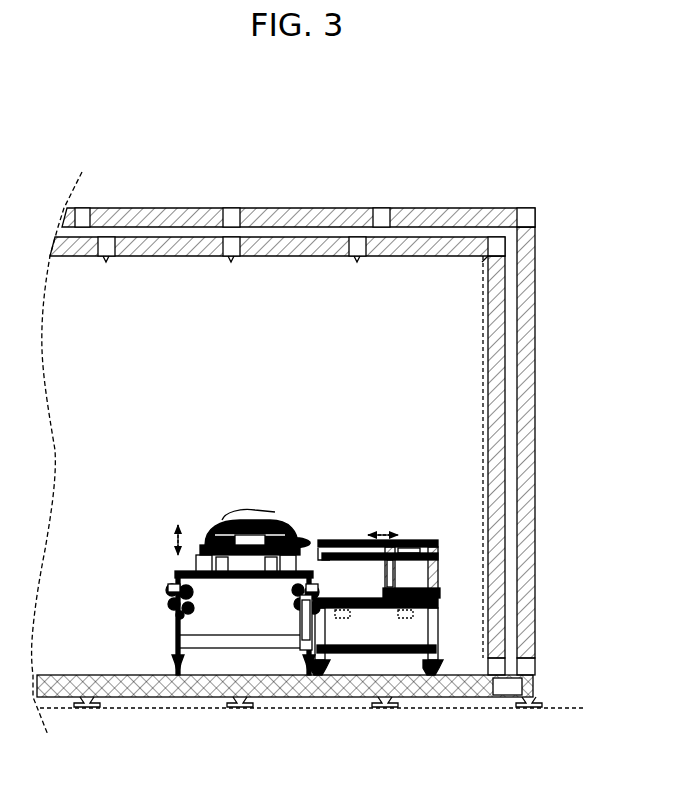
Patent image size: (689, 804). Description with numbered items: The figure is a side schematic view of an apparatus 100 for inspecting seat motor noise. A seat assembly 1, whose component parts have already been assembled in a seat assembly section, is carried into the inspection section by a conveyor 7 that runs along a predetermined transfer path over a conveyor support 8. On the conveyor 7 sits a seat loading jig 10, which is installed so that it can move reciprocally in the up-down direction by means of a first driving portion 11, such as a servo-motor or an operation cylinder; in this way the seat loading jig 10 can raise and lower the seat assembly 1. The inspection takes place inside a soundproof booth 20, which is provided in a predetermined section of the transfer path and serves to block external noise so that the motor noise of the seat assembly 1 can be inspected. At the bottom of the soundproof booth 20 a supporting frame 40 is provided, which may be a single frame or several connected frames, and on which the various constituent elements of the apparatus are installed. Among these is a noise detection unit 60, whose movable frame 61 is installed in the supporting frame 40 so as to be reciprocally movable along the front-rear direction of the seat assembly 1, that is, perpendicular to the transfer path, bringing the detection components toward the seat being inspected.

The apparatus for inspecting seat motor noise 100 is at (298, 117).
The soundproof booth 20 is at (525, 277).
The seat assembly 1 is at (283, 508).
The first driving portion 11 is at (301, 546).
The seat loading jig 10 is at (172, 565).
The conveyor 7 is at (221, 580).
The conveyor support 8 is at (195, 644).
The noise detection unit 60 is at (450, 541).
The movable frame 61 is at (437, 571).
The supporting frame 40 is at (450, 624).